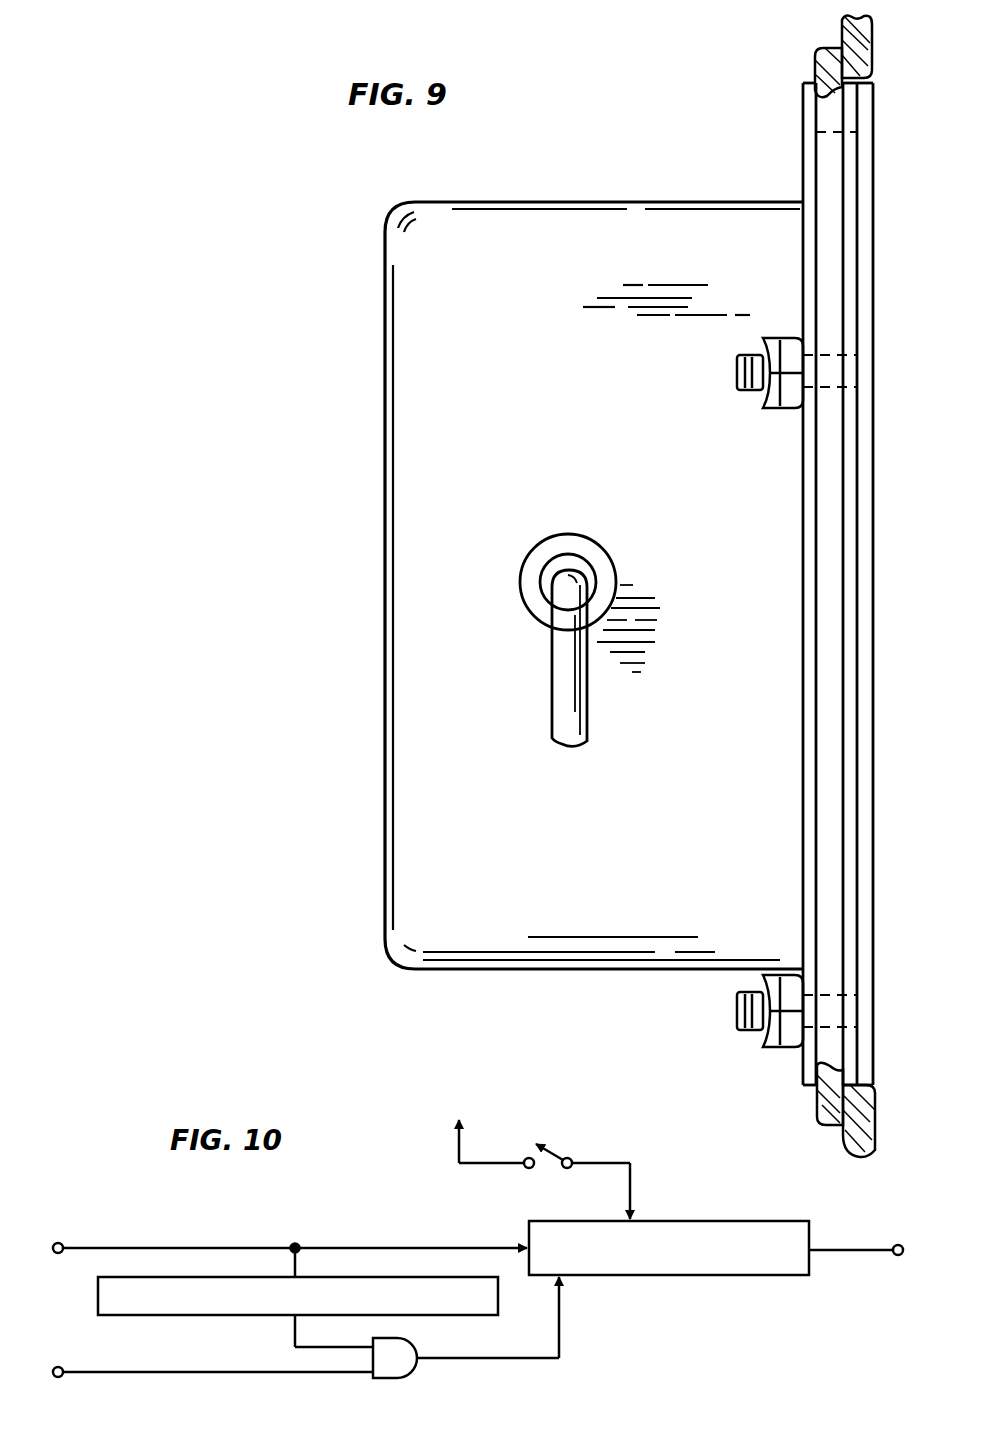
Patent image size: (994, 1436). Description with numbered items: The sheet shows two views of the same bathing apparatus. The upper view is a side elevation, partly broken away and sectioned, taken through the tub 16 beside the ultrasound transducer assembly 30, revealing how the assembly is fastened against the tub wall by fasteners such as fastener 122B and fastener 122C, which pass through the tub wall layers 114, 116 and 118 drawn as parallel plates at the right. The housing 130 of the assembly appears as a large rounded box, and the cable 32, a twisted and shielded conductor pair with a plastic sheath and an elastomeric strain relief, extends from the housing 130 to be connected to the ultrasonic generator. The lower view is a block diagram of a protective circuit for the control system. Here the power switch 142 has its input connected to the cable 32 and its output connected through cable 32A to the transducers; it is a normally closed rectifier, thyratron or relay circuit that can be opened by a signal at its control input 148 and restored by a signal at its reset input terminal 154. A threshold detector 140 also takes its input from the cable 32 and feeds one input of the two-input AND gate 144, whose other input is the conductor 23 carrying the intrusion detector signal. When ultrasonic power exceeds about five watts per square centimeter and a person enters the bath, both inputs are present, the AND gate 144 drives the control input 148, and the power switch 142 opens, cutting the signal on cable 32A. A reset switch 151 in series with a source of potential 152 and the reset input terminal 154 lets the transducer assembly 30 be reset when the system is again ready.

In FIG. 9, the tub 16 is at (842, 38).
In FIG. 9, the ultrasound transducer assembly 30 is at (505, 158).
In FIG. 9, the cable 32 is at (561, 659).
In FIG. 10, the cable 32 is at (178, 1248).
In FIG. 9, the panel 114 is at (863, 257).
In FIG. 9, the door panel 116 is at (855, 112).
In FIG. 9, the mounting plate 118 is at (803, 120).
In FIG. 9, the mounting bolt 122B is at (735, 372).
In FIG. 9, the fastener 122C is at (734, 1028).
In FIG. 9, the housing 130 is at (637, 201).
In FIG. 10, the threshold detector 140 is at (98, 1296).
In FIG. 10, the power switch 142 is at (766, 1224).
In FIG. 10, the AND gate 144 is at (410, 1353).
In FIG. 10, the control input 148 is at (563, 1278).
In FIG. 10, the reset switch 151 is at (550, 1140).
In FIG. 10, the source of potential 152 is at (455, 1122).
In FIG. 10, the reset input terminal 154 is at (634, 1217).
In FIG. 10, the conductor 23 is at (205, 1372).
In FIG. 10, the cable 32A is at (876, 1248).